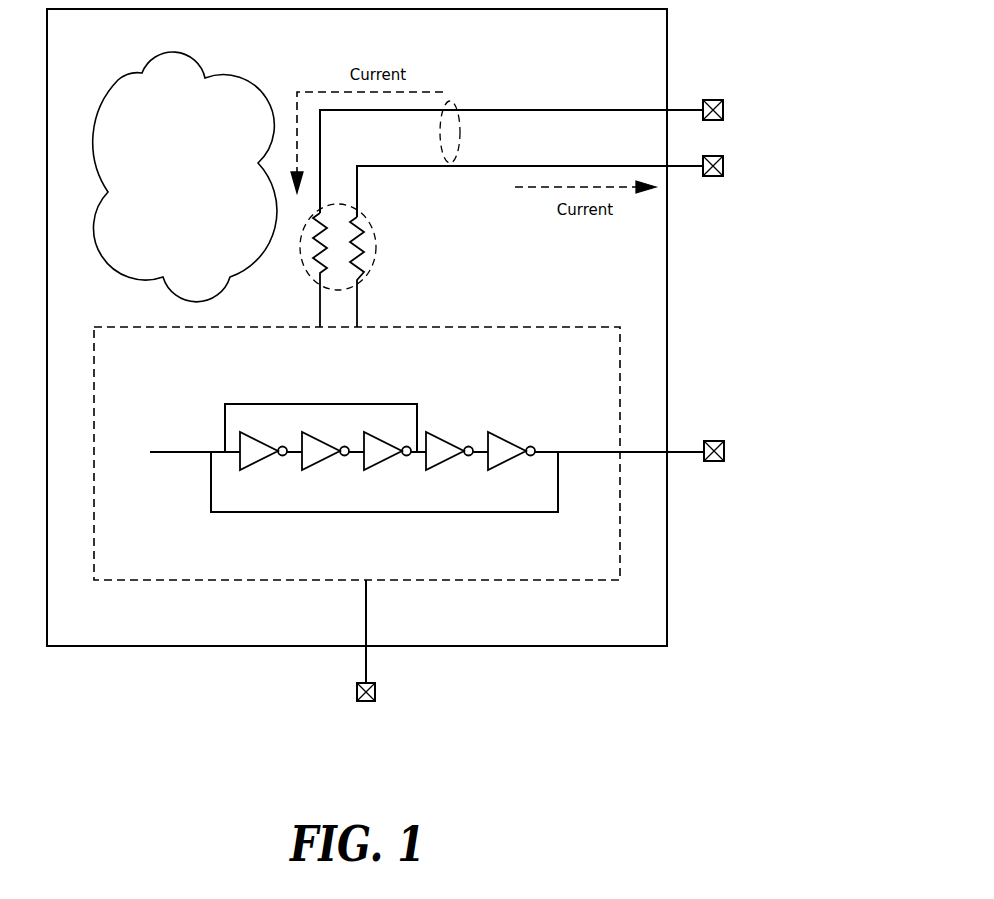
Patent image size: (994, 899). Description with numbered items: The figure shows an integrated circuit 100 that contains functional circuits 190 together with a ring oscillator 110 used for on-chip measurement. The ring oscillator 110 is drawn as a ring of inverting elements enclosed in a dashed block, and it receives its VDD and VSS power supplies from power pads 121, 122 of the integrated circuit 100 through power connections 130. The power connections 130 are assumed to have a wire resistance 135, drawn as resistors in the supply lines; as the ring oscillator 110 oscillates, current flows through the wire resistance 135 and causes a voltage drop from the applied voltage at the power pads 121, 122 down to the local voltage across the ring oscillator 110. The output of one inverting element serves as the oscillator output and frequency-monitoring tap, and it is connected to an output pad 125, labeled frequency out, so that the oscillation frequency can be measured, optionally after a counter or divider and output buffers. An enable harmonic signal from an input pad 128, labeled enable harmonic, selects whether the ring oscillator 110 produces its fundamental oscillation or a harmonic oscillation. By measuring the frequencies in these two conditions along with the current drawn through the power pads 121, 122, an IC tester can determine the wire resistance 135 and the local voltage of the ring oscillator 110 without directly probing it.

The integrated circuit 100 is at (510, 647).
The ring oscillator 110 is at (227, 581).
The power pad 121 is at (713, 100).
The power pad 122 is at (713, 177).
The output pad 125 is at (716, 462).
The input pad 128 is at (356, 692).
The power connections 130 is at (446, 168).
The wire resistance 135 is at (376, 248).
The functional circuits 190 is at (113, 82).